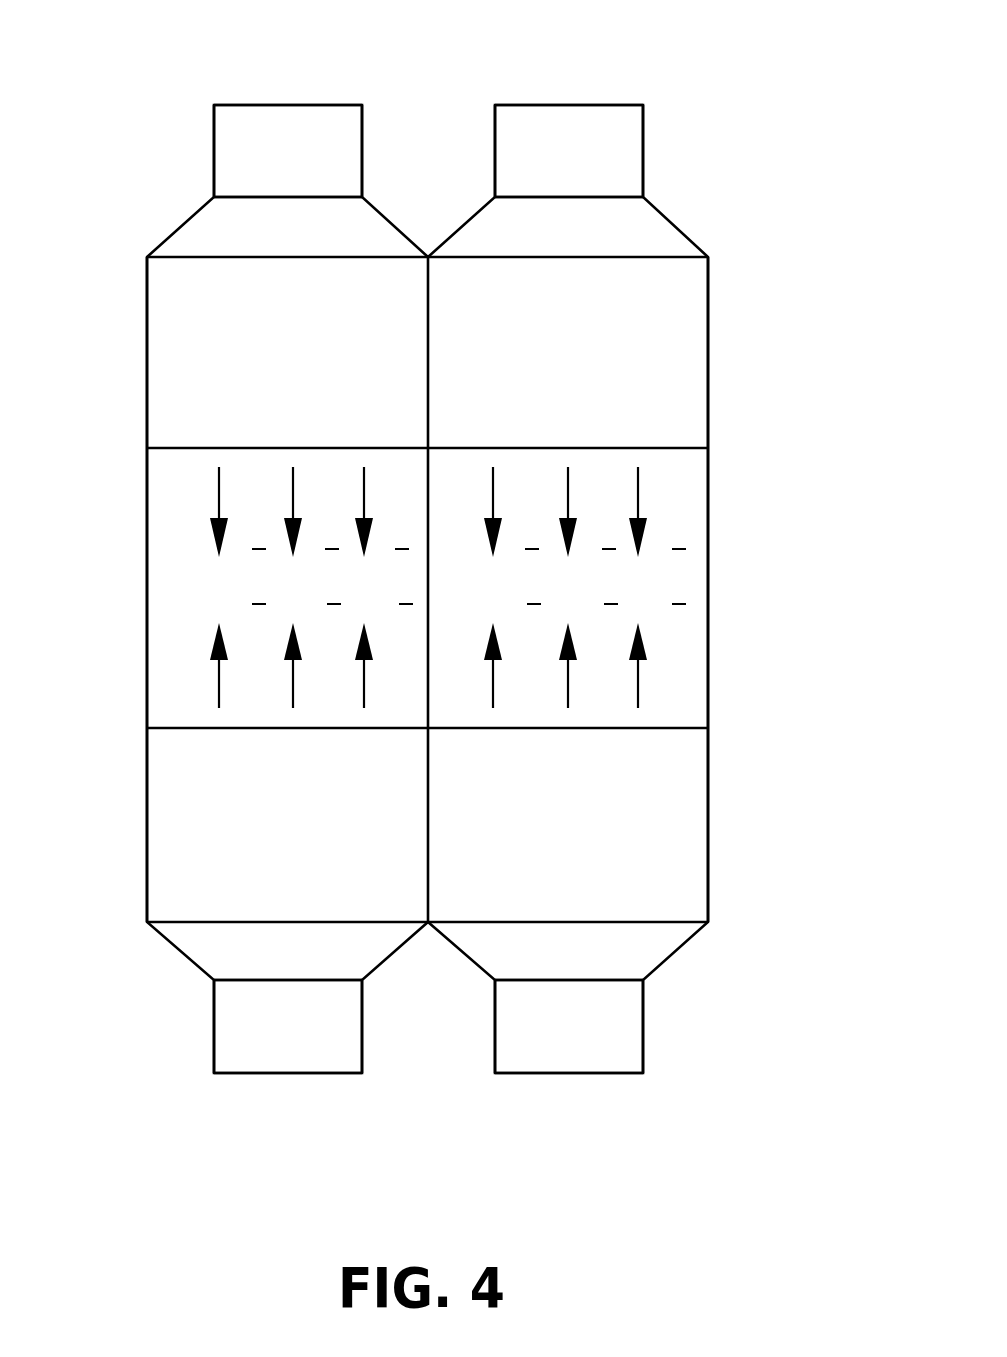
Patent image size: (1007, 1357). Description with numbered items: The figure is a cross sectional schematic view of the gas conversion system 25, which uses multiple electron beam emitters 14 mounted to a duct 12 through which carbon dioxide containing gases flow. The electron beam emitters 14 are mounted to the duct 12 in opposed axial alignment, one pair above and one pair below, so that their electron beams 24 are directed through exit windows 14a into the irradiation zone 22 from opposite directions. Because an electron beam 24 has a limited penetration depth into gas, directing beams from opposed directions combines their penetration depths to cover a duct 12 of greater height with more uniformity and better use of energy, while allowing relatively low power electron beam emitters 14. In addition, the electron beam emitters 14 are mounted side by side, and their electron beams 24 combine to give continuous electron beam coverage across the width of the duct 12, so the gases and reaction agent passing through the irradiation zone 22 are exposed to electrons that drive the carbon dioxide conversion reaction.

The duct 12 is at (708, 569).
The electron beam emitter 14 is at (258, 125).
The exit window 14a is at (240, 448).
The irradiation zone 22 is at (200, 584).
The electron beam 24 is at (293, 480).
The gas conversion system 25 is at (785, 252).